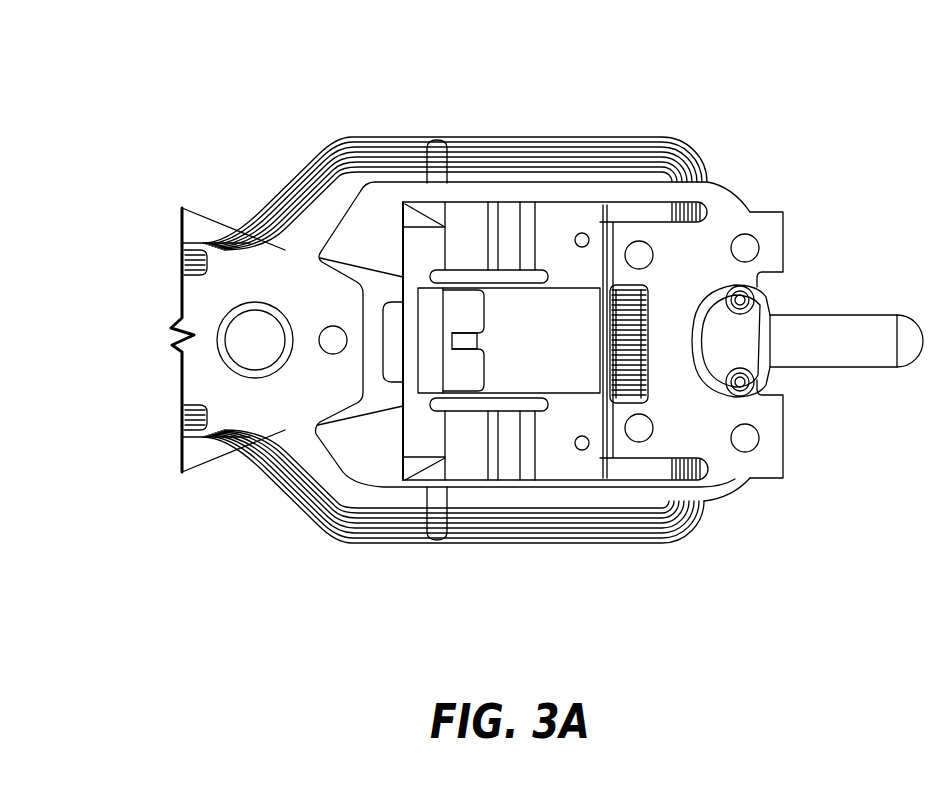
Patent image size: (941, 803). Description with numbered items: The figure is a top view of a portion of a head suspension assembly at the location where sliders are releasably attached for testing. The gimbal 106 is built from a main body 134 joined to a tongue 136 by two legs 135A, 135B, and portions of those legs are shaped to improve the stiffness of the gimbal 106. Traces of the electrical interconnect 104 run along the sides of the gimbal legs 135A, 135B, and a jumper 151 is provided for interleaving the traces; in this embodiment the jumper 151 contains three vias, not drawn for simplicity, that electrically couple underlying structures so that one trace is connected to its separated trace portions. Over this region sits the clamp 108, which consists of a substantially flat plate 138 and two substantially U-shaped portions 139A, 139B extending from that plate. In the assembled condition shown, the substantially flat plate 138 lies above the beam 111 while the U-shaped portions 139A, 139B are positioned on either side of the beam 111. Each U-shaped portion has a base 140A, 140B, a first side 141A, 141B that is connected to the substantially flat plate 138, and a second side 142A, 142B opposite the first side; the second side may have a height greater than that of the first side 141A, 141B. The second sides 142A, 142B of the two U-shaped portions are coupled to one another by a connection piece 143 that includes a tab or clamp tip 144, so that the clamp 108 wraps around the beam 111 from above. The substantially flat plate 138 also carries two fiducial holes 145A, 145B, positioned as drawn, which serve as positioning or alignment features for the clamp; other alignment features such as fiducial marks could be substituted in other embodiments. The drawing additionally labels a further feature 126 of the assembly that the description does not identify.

The electrical interconnect 104 is at (648, 137).
The gimbal 106 is at (303, 283).
The clamp 108 is at (548, 482).
The beam 111 is at (370, 392).
The end plate 126 is at (636, 236).
The main body 134 is at (283, 400).
The leg 135A is at (612, 190).
The leg 135B is at (593, 465).
The tongue 136 is at (705, 435).
The substantially flat plate 138 is at (598, 470).
The substantially U-shaped portion 139A is at (478, 216).
The substantially U-shaped portion 139B is at (462, 474).
The base 140A is at (453, 213).
The base 140B is at (433, 473).
The first side 141A is at (511, 230).
The first side 141B is at (510, 463).
The second side 142A is at (386, 208).
The second side 142B is at (400, 473).
The connection piece 143 is at (386, 340).
The tab or clamp tip 144 is at (413, 423).
The fiducial hole 145A is at (580, 233).
The fiducial hole 145B is at (582, 450).
The jumper 151 is at (730, 340).